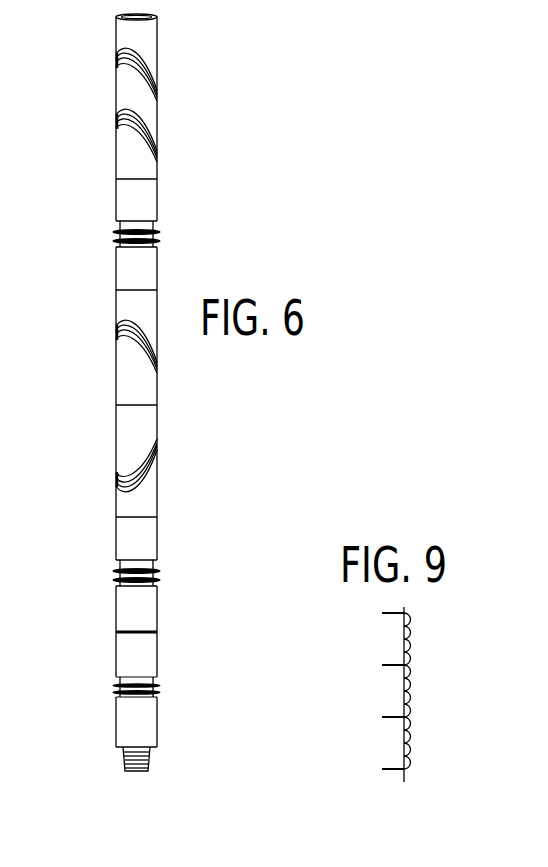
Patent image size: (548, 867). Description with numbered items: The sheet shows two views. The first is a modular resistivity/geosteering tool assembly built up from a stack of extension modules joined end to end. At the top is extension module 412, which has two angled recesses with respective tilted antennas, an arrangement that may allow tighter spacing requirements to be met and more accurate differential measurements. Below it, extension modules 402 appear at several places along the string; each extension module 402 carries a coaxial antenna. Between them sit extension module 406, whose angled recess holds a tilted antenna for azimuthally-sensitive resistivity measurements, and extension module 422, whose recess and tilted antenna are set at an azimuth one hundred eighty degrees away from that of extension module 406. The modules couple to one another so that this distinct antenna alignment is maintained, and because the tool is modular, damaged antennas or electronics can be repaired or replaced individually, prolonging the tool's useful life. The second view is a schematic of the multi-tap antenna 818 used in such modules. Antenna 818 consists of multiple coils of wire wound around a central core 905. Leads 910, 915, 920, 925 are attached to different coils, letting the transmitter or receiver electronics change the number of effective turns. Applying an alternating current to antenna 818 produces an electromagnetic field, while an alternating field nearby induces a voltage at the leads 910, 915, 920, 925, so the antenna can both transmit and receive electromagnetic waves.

In FIG. 6, the extension module 412 is at (120, 35).
In FIG. 6, the extension module 402 is at (120, 203).
In FIG. 6, the extension module 406 is at (120, 310).
In FIG. 6, the extension module 422 is at (120, 432).
In FIG. 9, the central core 905 is at (404, 782).
In FIG. 9, the antenna 818 is at (417, 652).
In FIG. 9, the lead 910 is at (368, 615).
In FIG. 9, the lead 915 is at (368, 667).
In FIG. 9, the lead 920 is at (368, 719).
In FIG. 9, the lead 925 is at (368, 770).